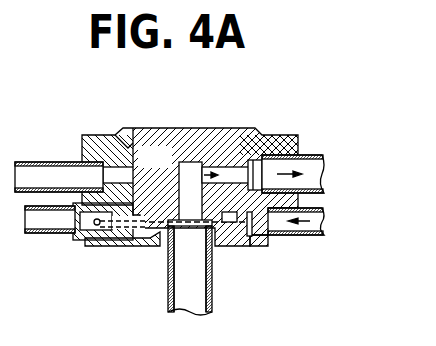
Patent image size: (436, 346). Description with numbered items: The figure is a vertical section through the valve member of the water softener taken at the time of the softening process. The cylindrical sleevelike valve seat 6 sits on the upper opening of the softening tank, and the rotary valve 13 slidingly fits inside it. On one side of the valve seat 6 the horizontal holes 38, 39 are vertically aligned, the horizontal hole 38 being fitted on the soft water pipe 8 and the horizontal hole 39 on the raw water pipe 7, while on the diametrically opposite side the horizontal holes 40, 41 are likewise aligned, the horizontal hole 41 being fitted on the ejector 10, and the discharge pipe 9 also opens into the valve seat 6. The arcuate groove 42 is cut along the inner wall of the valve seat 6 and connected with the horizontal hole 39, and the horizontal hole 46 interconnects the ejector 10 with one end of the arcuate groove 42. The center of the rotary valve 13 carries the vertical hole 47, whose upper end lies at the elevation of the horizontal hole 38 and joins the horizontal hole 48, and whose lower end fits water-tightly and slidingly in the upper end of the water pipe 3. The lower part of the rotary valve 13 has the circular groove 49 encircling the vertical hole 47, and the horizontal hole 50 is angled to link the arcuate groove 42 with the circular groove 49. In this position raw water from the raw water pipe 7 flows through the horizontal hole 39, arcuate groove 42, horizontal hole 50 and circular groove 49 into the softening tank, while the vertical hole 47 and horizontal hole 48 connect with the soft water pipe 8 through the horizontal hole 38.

The water pipe 3 is at (172, 302).
The cylindrical valve seat 6 is at (285, 135).
The raw water pipe 7 is at (315, 226).
The soft water pipe 8 is at (312, 153).
The discharge pipe 9 is at (50, 177).
The ejector 10 is at (73, 246).
The rotary valve 13 is at (190, 184).
The horizontal hole 38 is at (255, 165).
The horizontal hole 39 is at (262, 243).
The horizontal hole 40 is at (110, 165).
The horizontal hole 41 is at (106, 246).
The arcuate groove 42 is at (251, 236).
The horizontal hole 46 is at (186, 241).
The vertical hole 47 is at (198, 176).
The horizontal hole 48 is at (228, 177).
The circular groove 49 is at (170, 184).
The horizontal hole 50 is at (236, 238).